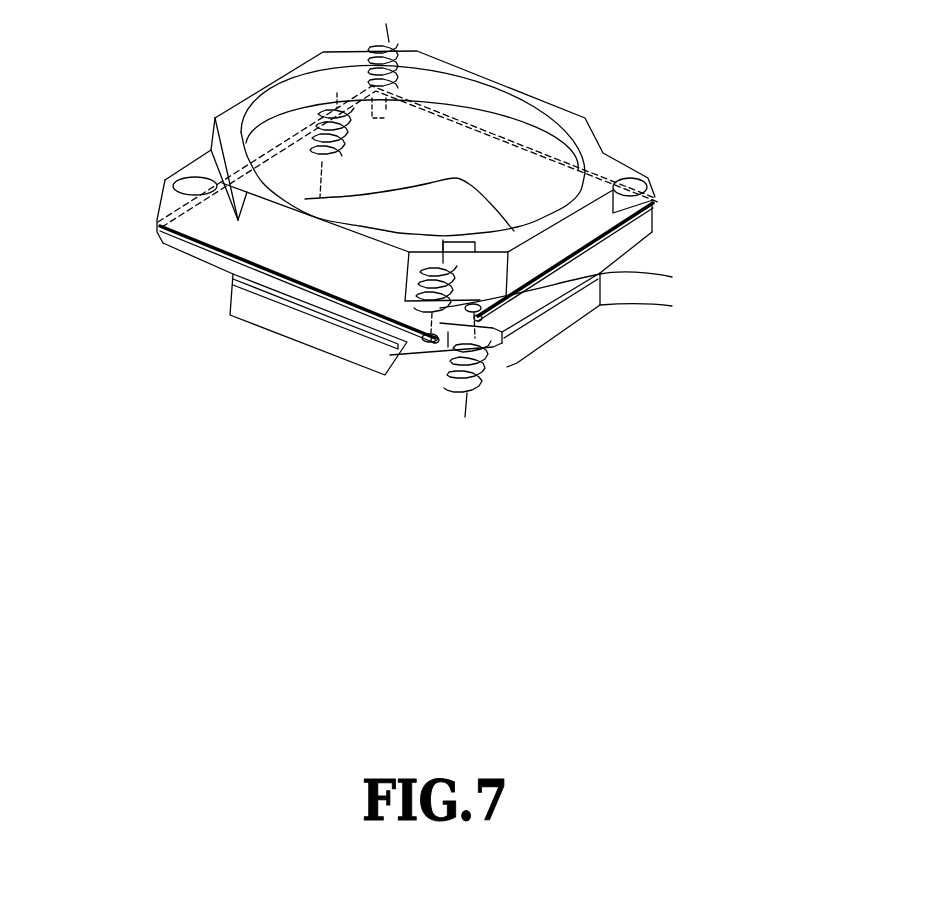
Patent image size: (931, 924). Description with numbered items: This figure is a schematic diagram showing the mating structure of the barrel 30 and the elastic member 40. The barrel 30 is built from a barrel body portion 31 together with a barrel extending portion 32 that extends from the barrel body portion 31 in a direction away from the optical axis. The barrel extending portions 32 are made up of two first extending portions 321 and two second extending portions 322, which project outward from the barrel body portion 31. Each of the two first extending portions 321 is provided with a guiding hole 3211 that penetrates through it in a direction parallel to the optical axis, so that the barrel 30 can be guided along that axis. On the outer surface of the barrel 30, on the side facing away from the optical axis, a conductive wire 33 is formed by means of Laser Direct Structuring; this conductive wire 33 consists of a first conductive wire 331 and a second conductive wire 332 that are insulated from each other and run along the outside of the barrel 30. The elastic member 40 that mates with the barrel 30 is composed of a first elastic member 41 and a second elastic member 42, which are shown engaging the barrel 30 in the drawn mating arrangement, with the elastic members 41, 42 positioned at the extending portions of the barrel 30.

The barrel 30 is at (436, 213).
The barrel body portion 31 is at (605, 152).
The barrel extending portion 32 is at (410, 214).
The first extending portion 321 is at (653, 200).
The guiding hole 3211 is at (177, 167).
The second extending portion 322 is at (600, 227).
The conductive wire 33 is at (507, 303).
The first conductive wire 331 is at (600, 303).
The second conductive wire 332 is at (600, 273).
The elastic member 40 is at (428, 276).
The first elastic member 41 is at (428, 342).
The second elastic member 42 is at (484, 388).